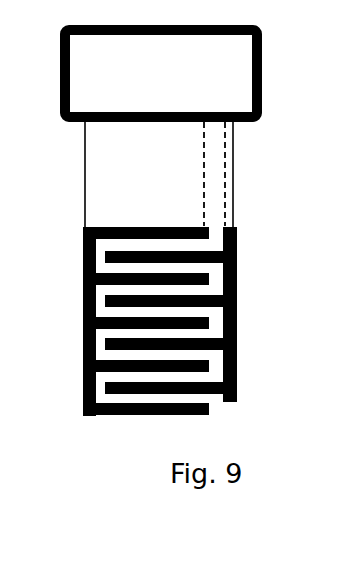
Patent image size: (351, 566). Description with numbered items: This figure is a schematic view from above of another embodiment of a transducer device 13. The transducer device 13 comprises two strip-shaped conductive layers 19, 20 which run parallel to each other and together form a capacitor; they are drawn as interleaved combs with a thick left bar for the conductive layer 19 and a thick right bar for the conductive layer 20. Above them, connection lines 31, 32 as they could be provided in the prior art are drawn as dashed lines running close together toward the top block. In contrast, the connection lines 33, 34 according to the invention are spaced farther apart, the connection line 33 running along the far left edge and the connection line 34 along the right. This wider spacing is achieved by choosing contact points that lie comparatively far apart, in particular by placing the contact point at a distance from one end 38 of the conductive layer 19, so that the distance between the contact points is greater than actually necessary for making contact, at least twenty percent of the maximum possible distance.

The transducer device 13 is at (172, 368).
The conductive layer 19 is at (83, 259).
The conductive layer 20 is at (238, 327).
The connection line 31 is at (204, 143).
The connection line 32 is at (230, 182).
The connection line 33 is at (85, 149).
The connection line 34 is at (230, 205).
The end of the conductive layer 38 is at (213, 228).